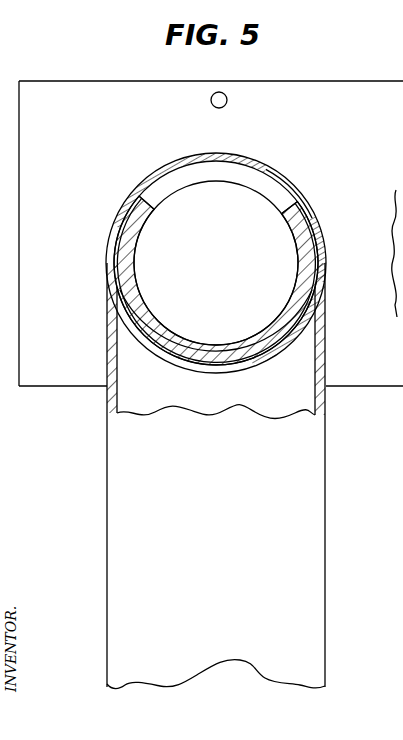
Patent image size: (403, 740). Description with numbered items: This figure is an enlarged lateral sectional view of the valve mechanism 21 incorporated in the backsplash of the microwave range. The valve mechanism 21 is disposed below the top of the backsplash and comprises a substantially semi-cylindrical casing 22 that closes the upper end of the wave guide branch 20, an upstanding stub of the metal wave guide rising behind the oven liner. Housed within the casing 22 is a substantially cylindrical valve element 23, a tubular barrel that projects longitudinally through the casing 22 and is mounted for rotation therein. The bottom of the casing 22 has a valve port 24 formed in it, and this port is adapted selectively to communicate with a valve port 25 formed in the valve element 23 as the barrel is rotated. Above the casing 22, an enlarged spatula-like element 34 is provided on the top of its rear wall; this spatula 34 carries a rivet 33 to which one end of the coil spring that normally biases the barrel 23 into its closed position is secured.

The wave guide branch 20 is at (300, 453).
The valve mechanism 21 is at (303, 184).
The valve casing 22 is at (128, 338).
The valve element 23 is at (295, 293).
The valve port 24 is at (257, 365).
The valve port 25 is at (160, 199).
The rivet 33 is at (225, 94).
The spatula-like element 34 is at (300, 92).